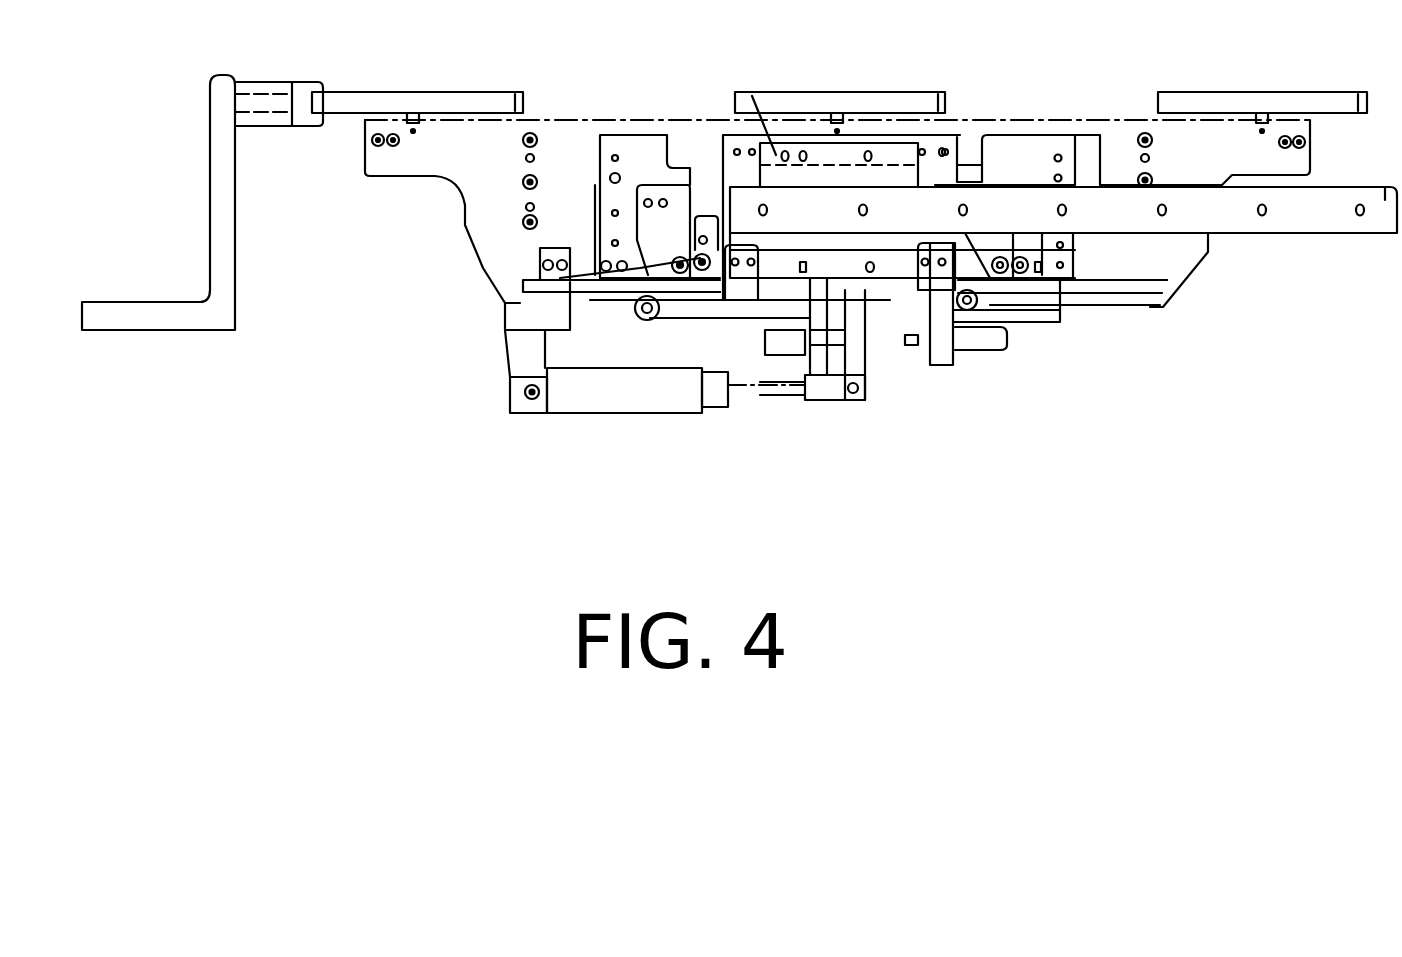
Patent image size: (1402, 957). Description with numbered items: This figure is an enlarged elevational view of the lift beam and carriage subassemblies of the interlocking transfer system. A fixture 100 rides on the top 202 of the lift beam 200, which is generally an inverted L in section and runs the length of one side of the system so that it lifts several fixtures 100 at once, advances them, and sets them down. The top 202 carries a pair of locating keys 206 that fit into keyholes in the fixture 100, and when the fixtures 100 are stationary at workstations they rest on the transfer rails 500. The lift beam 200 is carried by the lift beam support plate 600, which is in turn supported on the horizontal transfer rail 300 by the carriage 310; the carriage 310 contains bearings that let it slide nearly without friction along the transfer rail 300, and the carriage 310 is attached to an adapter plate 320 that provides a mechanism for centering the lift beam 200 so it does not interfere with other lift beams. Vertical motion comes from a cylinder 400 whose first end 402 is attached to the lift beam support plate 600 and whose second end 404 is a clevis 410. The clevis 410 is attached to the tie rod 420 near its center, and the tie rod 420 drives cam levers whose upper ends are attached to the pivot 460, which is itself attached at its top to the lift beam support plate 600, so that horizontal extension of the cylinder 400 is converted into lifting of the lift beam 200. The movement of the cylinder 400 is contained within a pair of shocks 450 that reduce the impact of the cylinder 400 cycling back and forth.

The fixture 100 is at (372, 92).
The lift beam 200 is at (372, 150).
The top portion of lift beam 202 is at (614, 125).
The locating keys 206 is at (425, 115).
The transfer rail 300 is at (1285, 220).
The carriage 310 is at (787, 150).
The adapter plate 320 is at (953, 137).
The cylinder 400 is at (603, 400).
The first end of cylinder 402 is at (533, 395).
The second end of cylinder 404 is at (820, 392).
The clevis 410 is at (855, 397).
The tie rod 420 is at (890, 305).
The shocks 450 is at (985, 345).
The pivot 460 is at (680, 268).
The transfer rails 500 is at (311, 100).
The lift beam support plate 600 is at (1020, 135).